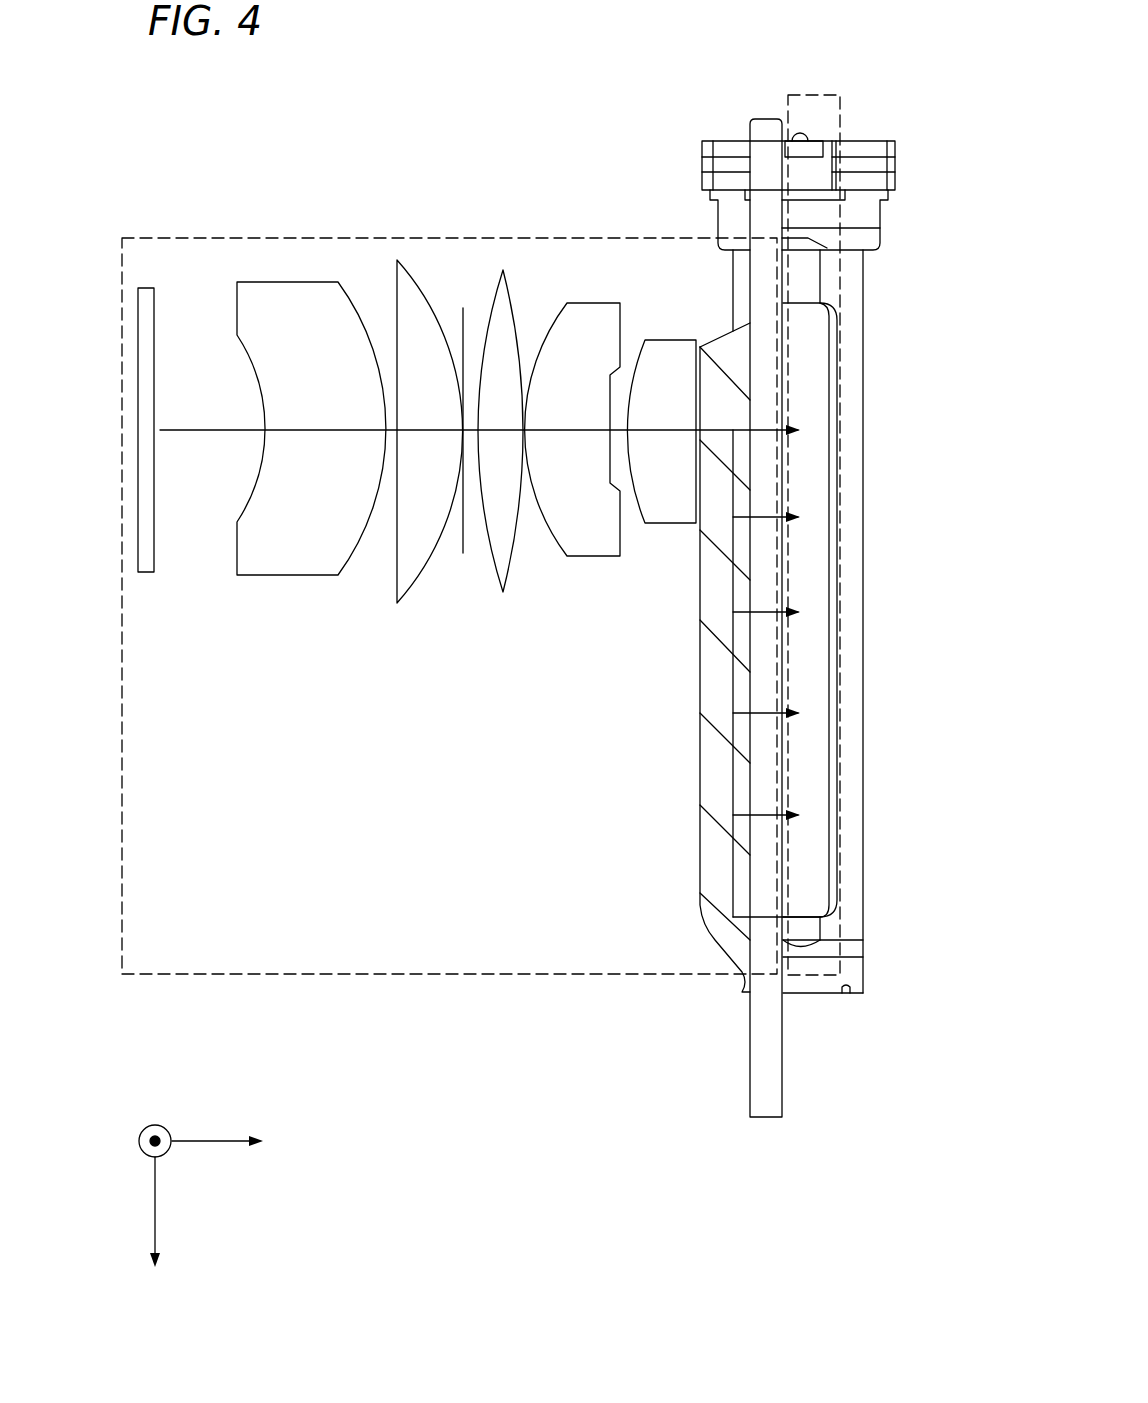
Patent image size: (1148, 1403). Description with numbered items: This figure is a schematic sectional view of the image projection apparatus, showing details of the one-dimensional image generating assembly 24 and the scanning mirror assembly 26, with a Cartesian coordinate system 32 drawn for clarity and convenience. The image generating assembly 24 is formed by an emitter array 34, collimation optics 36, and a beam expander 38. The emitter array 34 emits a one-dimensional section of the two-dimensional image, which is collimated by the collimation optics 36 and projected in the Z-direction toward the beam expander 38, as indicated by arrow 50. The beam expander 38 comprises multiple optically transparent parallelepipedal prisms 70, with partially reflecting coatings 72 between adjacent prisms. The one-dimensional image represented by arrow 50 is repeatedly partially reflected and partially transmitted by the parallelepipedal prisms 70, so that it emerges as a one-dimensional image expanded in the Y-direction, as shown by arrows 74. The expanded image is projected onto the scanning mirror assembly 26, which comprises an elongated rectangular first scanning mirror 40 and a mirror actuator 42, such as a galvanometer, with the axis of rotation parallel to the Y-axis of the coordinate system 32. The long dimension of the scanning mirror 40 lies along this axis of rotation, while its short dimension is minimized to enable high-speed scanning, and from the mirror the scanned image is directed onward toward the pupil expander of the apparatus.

The 1D image generating assembly 24 is at (253, 975).
The scanning mirror assembly 26 is at (818, 95).
The Cartesian coordinate system 32 is at (226, 1202).
The emitter array 34 is at (138, 527).
The collimation optics 36 is at (370, 786).
The beam expander 38 is at (730, 932).
The first scanning mirror 40 is at (812, 363).
The mirror actuator 42 is at (813, 173).
The arrow 50 is at (310, 430).
The parallelepipedal prisms 70 is at (720, 538).
The partially reflecting coatings 72 is at (717, 643).
The arrows 74 is at (800, 611).